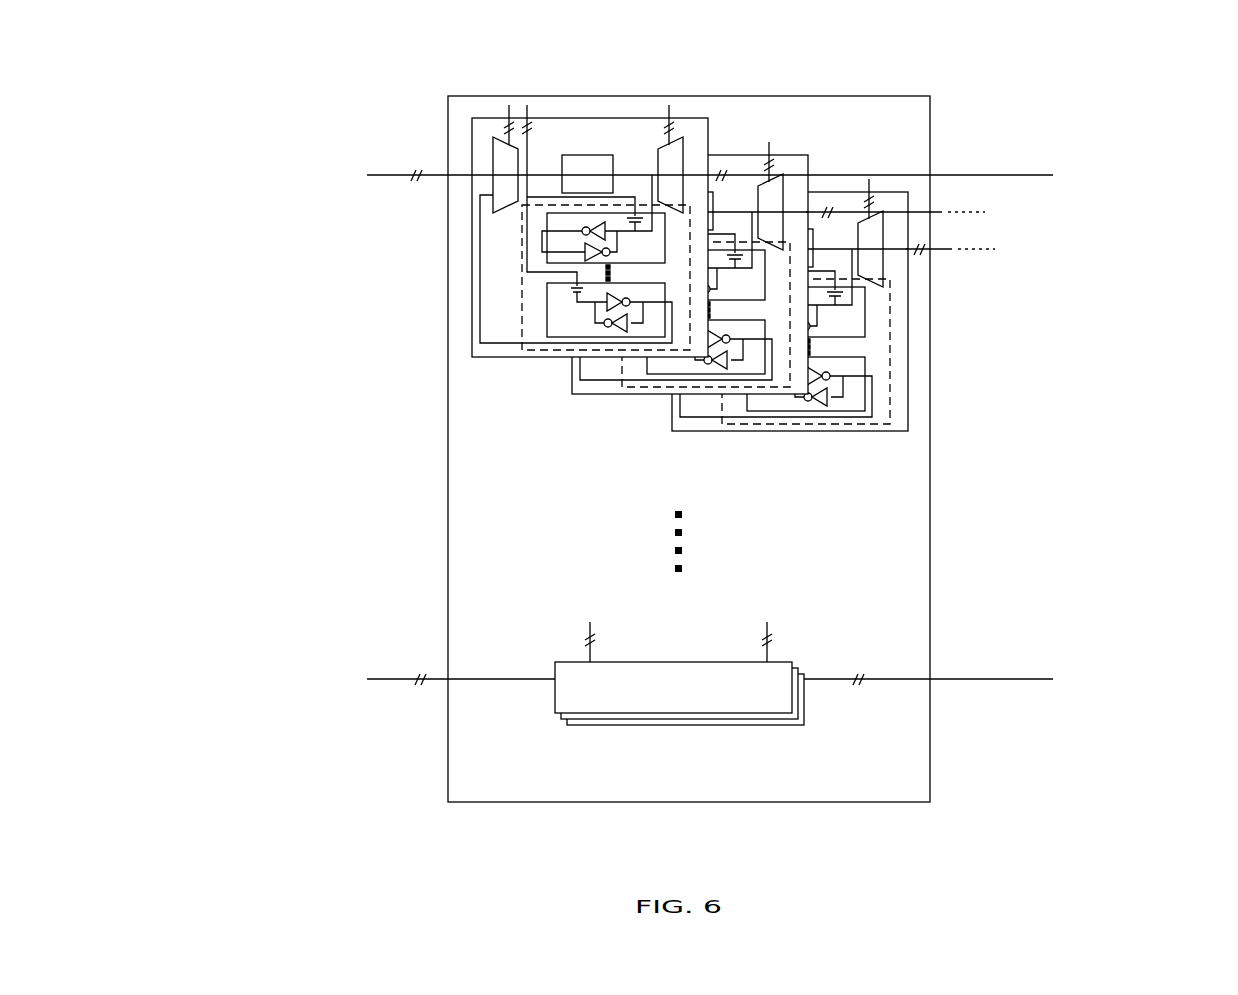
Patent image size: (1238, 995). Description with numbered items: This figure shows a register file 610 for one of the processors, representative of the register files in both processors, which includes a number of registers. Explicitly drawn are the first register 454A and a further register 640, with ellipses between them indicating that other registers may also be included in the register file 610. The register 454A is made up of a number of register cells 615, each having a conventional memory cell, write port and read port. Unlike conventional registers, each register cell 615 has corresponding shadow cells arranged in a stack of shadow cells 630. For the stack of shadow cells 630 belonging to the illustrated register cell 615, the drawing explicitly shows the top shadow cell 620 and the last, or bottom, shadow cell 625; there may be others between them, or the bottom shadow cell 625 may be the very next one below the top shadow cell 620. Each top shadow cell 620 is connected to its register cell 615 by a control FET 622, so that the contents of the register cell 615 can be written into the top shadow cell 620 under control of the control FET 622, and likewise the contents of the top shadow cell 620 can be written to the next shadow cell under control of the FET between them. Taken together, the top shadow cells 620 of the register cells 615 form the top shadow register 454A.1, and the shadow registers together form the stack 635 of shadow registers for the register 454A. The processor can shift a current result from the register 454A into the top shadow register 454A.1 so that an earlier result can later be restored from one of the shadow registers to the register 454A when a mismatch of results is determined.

The register file 610 is at (556, 96).
The register cell 615 is at (472, 150).
The top shadow cell 620 is at (547, 252).
The control FET 622 is at (627, 219).
The bottom shadow cell 625 is at (547, 311).
The stack of shadow cells 630 is at (526, 352).
The stack of shadow registers 635 is at (552, 351).
The top shadow register 454A.1 is at (667, 226).
The first register 454A is at (719, 518).
The register 640 is at (675, 737).